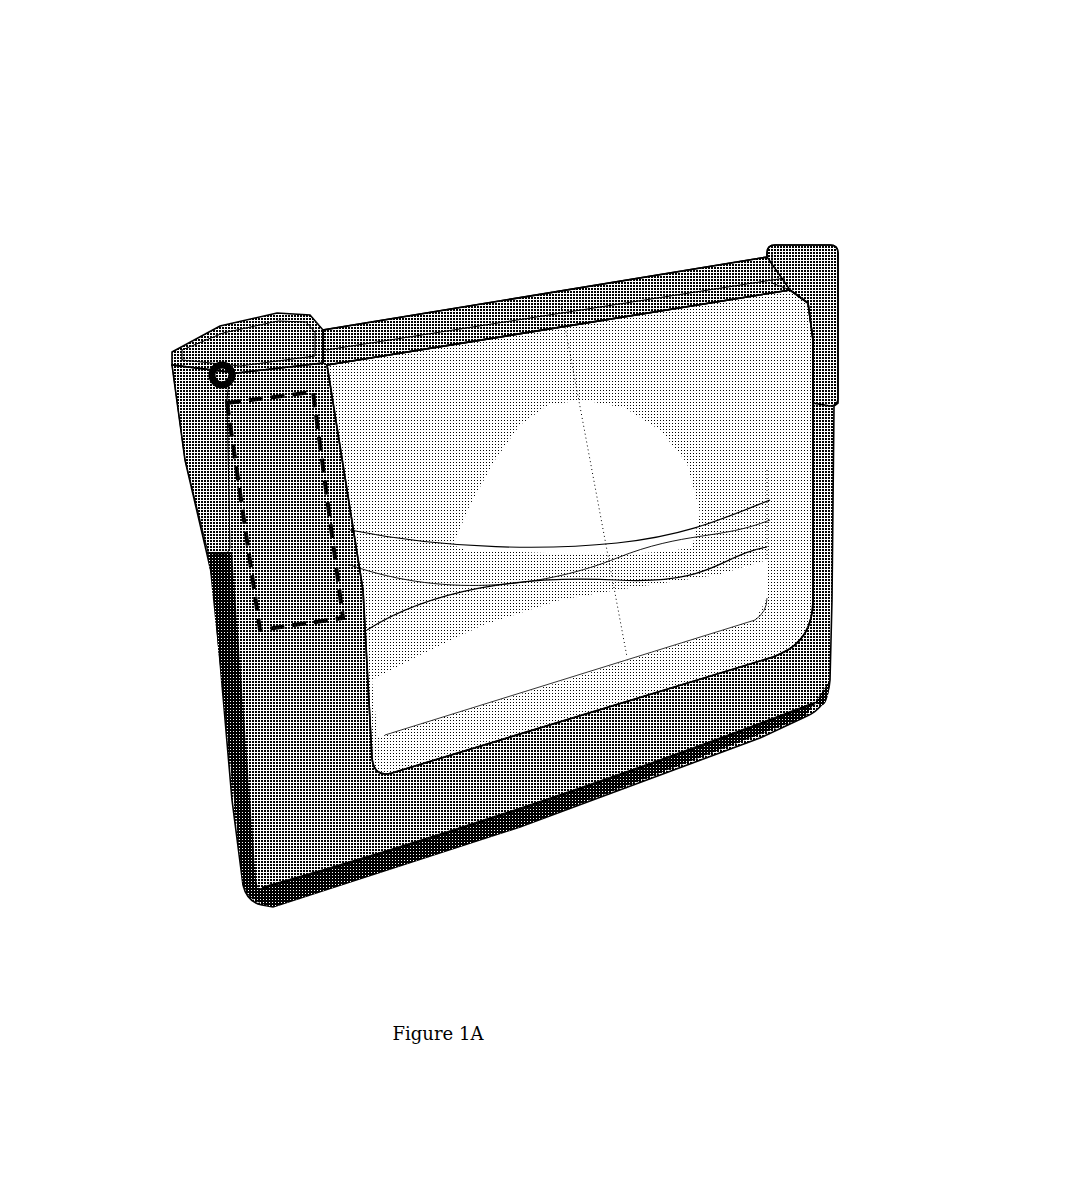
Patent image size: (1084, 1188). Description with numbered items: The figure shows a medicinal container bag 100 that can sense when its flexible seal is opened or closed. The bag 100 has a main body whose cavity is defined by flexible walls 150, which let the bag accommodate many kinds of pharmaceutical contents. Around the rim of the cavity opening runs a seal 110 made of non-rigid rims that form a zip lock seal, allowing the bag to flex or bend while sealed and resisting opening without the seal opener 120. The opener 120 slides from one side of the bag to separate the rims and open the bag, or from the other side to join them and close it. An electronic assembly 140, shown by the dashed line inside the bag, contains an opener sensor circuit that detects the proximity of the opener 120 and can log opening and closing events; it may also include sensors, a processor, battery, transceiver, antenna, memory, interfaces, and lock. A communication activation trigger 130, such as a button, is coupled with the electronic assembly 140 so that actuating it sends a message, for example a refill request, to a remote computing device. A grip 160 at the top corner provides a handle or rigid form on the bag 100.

The bag 100 is at (760, 74).
The seal 110 is at (594, 278).
The opener 120 is at (286, 321).
The communication activation trigger 130 is at (222, 361).
The electronic assembly 140 is at (247, 483).
The flexible walls 150 is at (497, 724).
The grip 160 is at (793, 247).